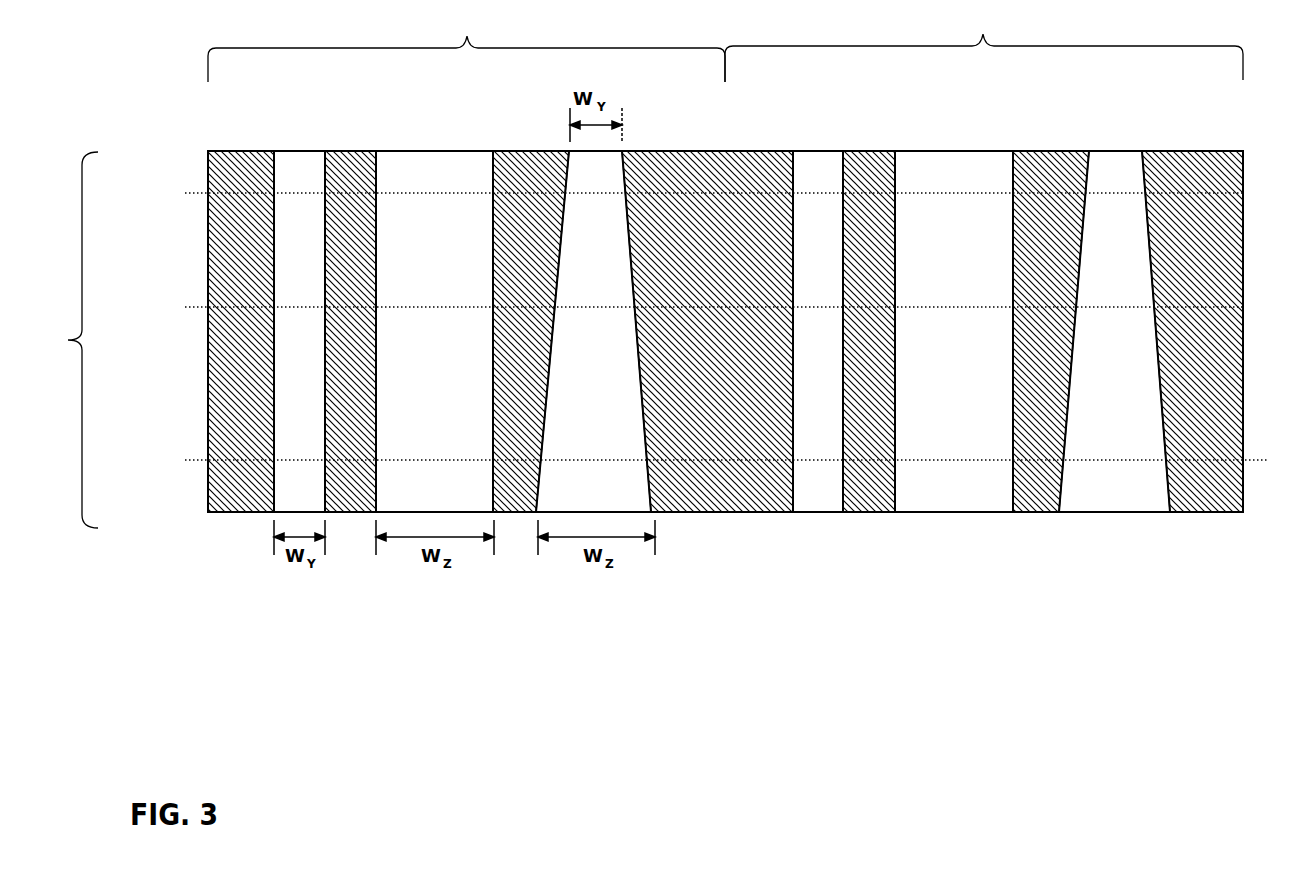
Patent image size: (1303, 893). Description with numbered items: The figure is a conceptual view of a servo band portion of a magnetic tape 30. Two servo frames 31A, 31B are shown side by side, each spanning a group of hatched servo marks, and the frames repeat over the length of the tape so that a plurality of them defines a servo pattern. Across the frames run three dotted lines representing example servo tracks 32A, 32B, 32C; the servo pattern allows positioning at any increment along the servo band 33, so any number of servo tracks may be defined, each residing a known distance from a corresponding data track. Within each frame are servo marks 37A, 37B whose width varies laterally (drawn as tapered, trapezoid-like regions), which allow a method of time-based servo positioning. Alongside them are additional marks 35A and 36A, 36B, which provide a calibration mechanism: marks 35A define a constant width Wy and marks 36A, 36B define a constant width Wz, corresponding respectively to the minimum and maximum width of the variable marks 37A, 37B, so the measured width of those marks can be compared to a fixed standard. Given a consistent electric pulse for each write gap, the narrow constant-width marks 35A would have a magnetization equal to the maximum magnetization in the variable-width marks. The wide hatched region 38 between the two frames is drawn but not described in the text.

The magnetic tape 30 is at (1274, 490).
The servo frame 31A is at (466, 46).
The servo frame 31B is at (984, 44).
The servo track 32A is at (172, 193).
The servo track 32B is at (172, 307).
The servo track 32C is at (172, 460).
The servo band 33 is at (65, 340).
The servo mark 35A is at (311, 228).
The servo mark 36A is at (437, 229).
The servo mark 36B is at (940, 228).
The servo mark 37A is at (625, 428).
The servo mark 37B is at (1120, 450).
The wide hatched material region 38 is at (730, 212).